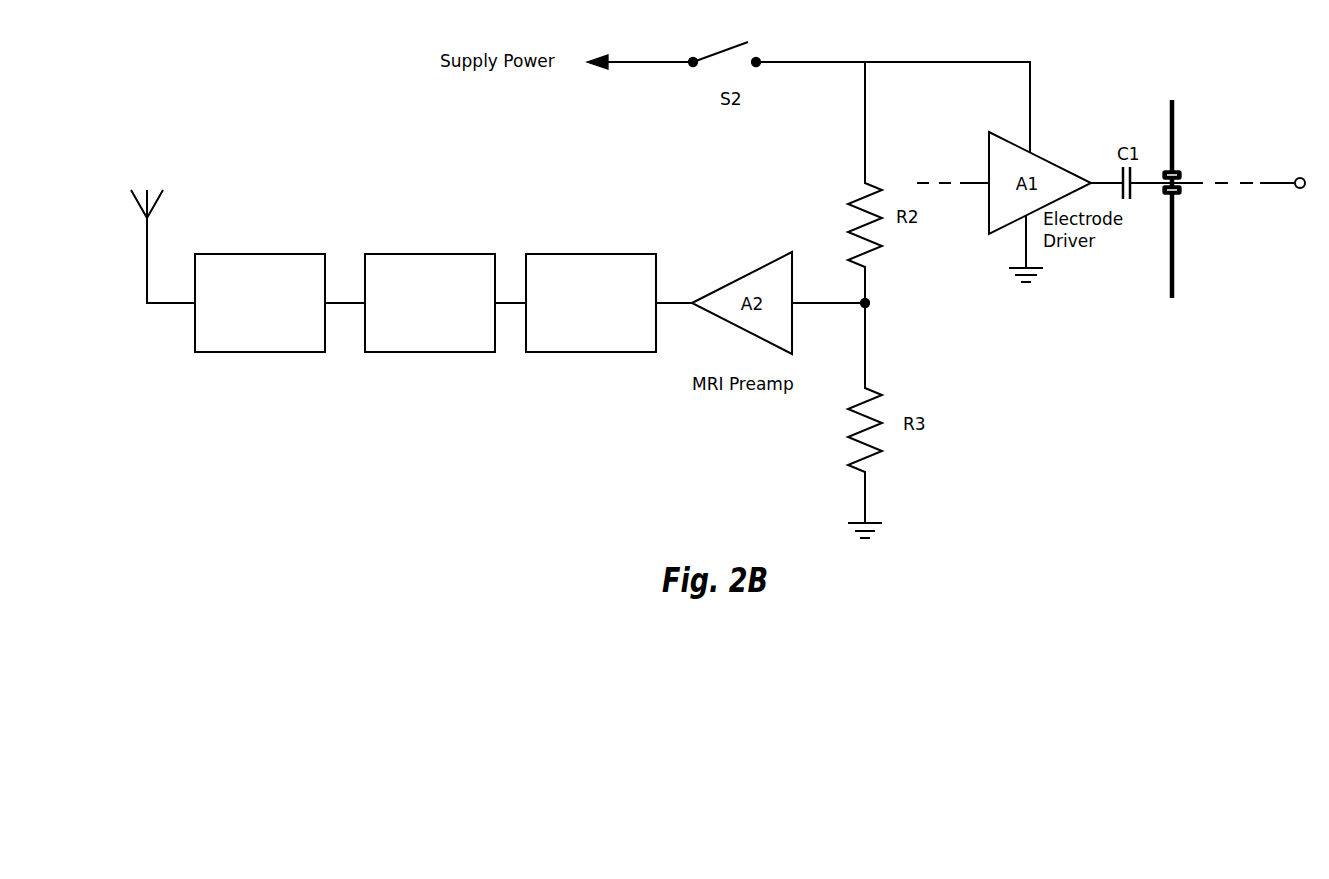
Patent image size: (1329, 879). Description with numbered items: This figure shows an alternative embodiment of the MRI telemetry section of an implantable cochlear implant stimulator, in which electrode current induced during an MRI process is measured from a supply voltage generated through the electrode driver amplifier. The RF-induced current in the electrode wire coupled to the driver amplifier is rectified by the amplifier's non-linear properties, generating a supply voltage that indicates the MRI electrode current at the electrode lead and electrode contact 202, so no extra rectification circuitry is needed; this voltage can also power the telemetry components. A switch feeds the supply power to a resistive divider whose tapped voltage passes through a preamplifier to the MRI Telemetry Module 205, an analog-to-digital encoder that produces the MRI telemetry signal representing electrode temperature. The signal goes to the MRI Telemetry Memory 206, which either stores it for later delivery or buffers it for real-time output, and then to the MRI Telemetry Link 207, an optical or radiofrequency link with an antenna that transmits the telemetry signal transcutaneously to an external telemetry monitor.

The MRI Telemetry Link 207 is at (293, 254).
The MRI Telemetry Memory 206 is at (458, 254).
The MRI Telemetry Module 205 is at (620, 254).
The electrode contact 202 is at (1297, 189).